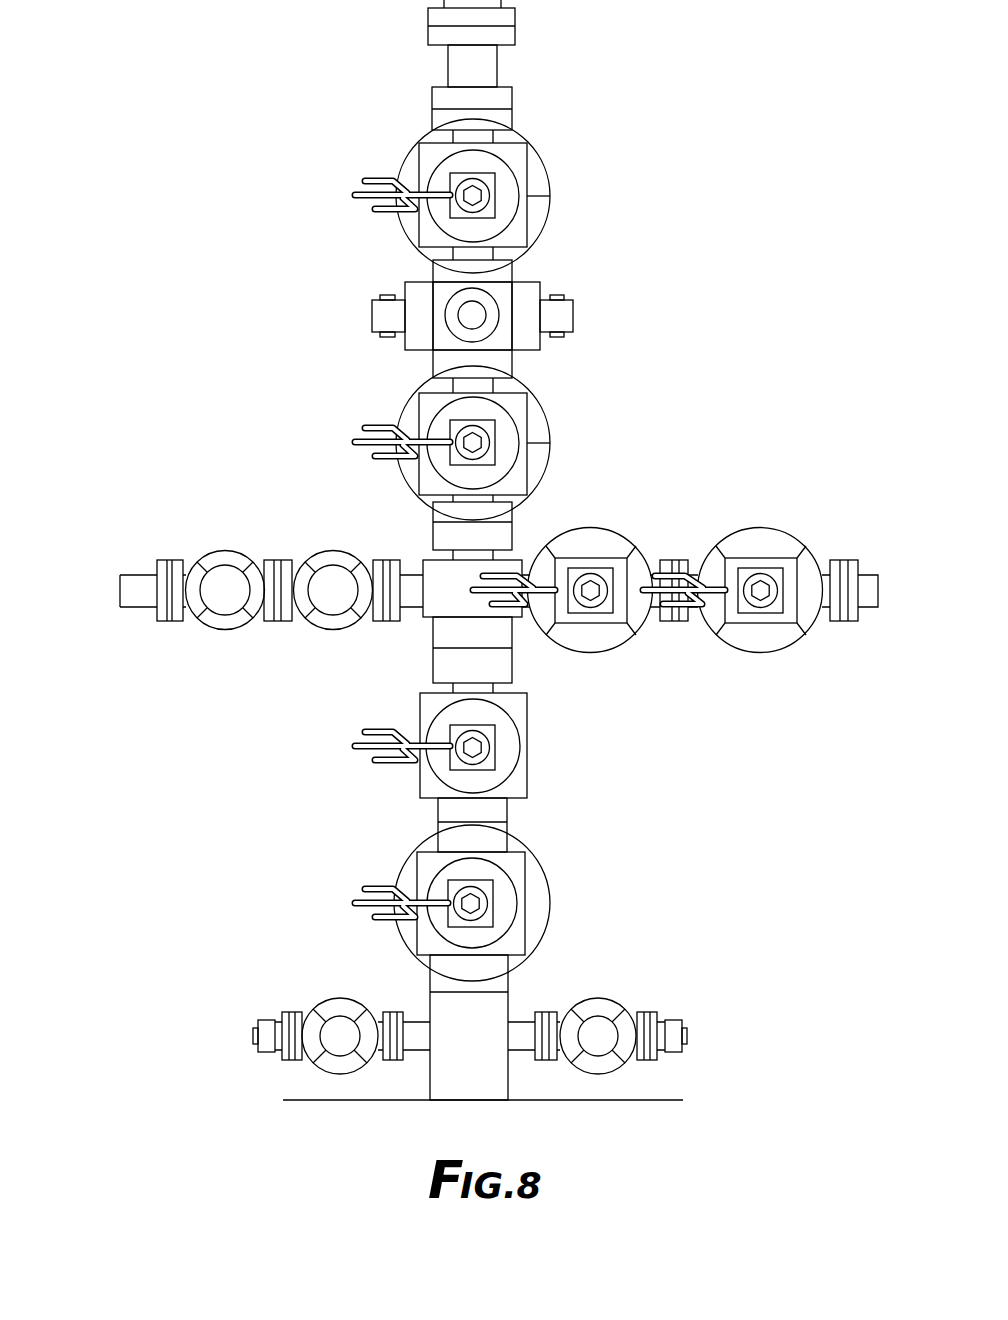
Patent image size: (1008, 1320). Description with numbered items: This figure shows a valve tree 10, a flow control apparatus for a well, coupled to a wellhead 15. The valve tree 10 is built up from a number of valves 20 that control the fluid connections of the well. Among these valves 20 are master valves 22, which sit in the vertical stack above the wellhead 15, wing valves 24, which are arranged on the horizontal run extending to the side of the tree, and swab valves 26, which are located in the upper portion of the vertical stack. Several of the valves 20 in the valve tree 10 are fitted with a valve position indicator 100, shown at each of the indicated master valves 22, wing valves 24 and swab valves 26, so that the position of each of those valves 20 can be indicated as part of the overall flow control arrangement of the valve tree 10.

The valve tree 10 is at (163, 140).
The wellhead 15 is at (508, 1010).
The valve 20 is at (540, 157).
The master valve 22 is at (508, 776).
The wing valve 24 is at (575, 625).
The swab valve 26 is at (425, 250).
The valve position indicator 100 is at (450, 185).